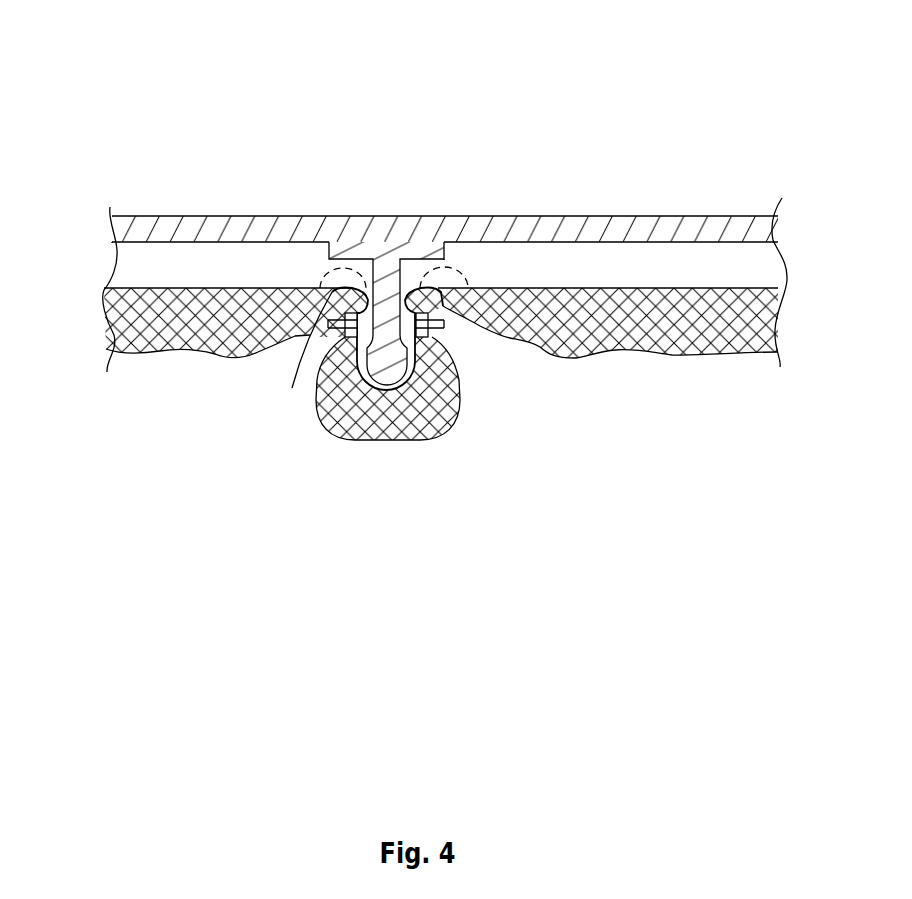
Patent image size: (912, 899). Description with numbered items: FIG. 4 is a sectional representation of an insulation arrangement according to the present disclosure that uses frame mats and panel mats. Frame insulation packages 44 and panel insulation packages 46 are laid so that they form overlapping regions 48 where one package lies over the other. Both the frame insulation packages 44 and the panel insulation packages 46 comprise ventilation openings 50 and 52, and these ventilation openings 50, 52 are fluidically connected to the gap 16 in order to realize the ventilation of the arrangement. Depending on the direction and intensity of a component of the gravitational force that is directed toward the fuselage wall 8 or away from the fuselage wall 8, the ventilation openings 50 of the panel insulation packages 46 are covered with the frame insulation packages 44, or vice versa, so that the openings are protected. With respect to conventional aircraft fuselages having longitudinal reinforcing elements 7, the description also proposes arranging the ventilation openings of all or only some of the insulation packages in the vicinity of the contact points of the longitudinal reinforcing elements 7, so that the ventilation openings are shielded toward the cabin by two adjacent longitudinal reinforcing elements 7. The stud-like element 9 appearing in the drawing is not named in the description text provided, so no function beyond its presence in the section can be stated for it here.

The gap 16 is at (80, 278).
The longitudinal reinforcing element 7 is at (708, 268).
The fuselage wall 8 is at (405, 237).
The T-shaped stud 9 is at (387, 272).
The panel insulation package 46 is at (208, 330).
The frame insulation package 44 is at (383, 392).
The overlapping region 48 is at (292, 388).
The ventilation opening 50 is at (417, 291).
The ventilation opening 52 is at (441, 290).